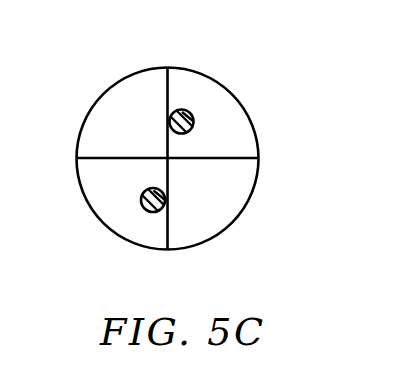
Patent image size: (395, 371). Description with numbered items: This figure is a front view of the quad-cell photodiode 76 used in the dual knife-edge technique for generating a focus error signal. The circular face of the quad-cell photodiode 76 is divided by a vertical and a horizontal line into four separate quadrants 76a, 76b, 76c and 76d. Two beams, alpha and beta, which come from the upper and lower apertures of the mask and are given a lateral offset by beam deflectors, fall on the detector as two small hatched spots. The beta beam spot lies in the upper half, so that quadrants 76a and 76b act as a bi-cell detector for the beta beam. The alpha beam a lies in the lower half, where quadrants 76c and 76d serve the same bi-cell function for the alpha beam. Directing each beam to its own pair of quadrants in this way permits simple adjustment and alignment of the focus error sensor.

The quad-cell photodiode 76 is at (181, 164).
The quadrant 76a is at (117, 103).
The quadrant 76b is at (196, 84).
The quadrant 76c is at (243, 198).
The quadrant 76d is at (128, 233).
The alpha beam a is at (141, 197).